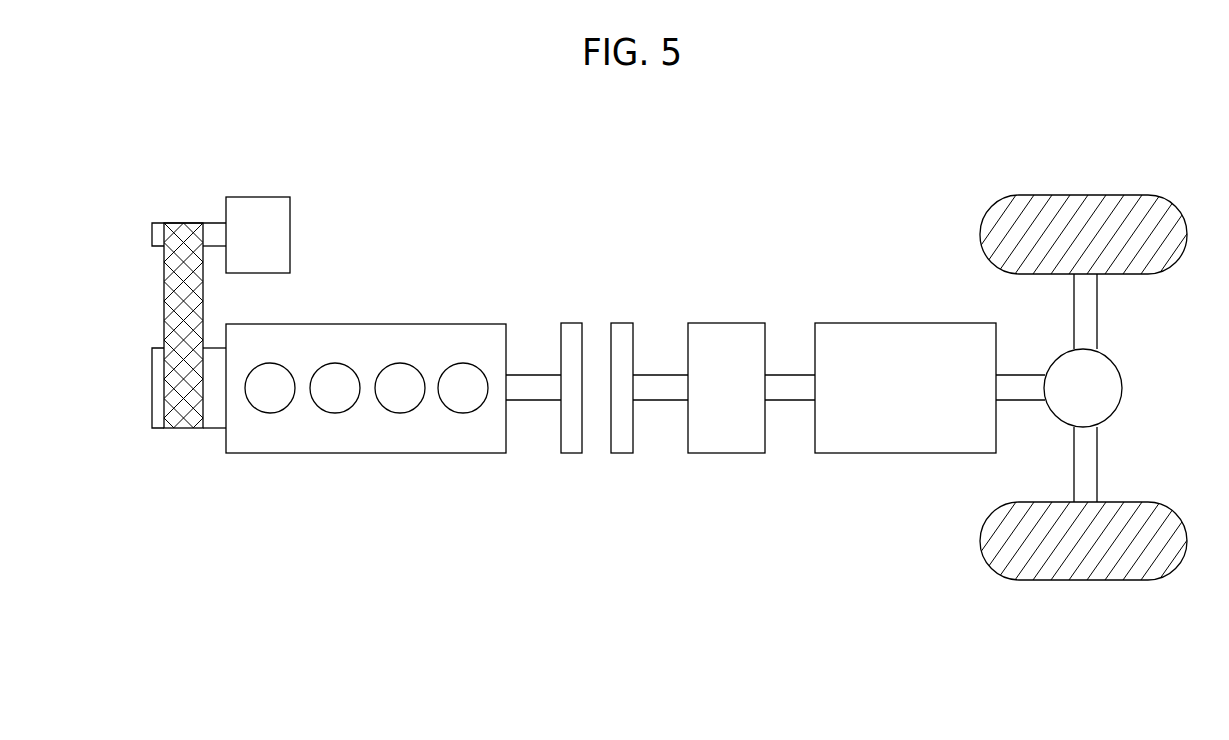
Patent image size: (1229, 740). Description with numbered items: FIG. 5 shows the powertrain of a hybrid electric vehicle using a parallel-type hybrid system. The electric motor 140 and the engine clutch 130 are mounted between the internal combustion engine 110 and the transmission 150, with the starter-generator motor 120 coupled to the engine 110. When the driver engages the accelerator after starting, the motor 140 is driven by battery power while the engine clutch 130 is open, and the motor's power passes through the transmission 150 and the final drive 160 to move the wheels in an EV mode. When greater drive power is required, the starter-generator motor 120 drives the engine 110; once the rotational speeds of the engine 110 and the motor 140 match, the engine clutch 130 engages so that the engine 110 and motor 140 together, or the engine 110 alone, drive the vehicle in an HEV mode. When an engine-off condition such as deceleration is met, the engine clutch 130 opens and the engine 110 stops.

The internal combustion engine 110 is at (458, 324).
The starter-generator motor 120 is at (243, 197).
The engine clutch 130 is at (623, 323).
The electric motor 140 is at (717, 323).
The transmission 150 is at (948, 323).
The final drive 160 is at (1120, 362).